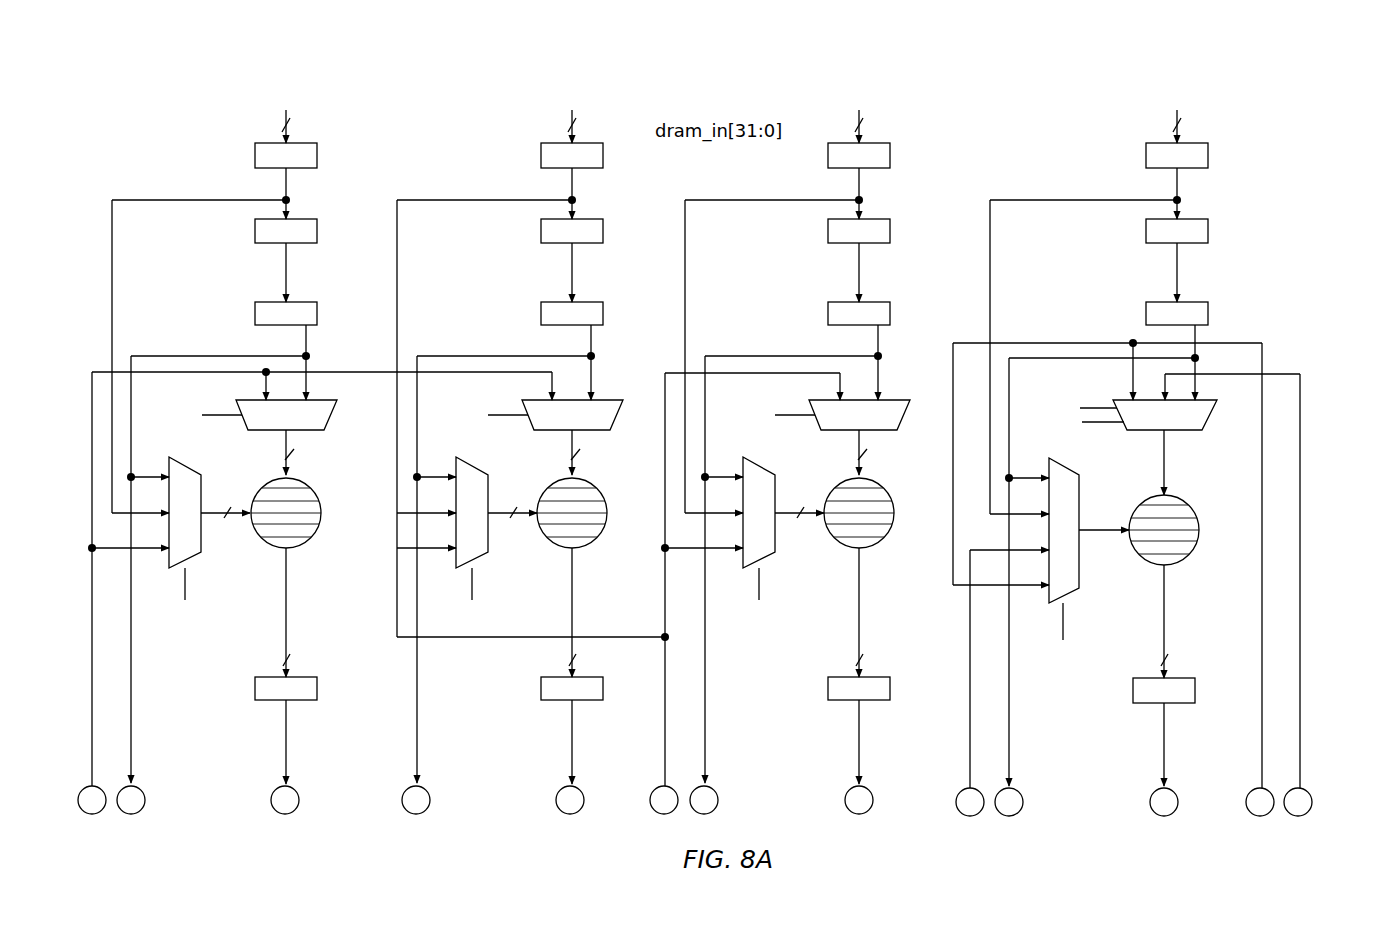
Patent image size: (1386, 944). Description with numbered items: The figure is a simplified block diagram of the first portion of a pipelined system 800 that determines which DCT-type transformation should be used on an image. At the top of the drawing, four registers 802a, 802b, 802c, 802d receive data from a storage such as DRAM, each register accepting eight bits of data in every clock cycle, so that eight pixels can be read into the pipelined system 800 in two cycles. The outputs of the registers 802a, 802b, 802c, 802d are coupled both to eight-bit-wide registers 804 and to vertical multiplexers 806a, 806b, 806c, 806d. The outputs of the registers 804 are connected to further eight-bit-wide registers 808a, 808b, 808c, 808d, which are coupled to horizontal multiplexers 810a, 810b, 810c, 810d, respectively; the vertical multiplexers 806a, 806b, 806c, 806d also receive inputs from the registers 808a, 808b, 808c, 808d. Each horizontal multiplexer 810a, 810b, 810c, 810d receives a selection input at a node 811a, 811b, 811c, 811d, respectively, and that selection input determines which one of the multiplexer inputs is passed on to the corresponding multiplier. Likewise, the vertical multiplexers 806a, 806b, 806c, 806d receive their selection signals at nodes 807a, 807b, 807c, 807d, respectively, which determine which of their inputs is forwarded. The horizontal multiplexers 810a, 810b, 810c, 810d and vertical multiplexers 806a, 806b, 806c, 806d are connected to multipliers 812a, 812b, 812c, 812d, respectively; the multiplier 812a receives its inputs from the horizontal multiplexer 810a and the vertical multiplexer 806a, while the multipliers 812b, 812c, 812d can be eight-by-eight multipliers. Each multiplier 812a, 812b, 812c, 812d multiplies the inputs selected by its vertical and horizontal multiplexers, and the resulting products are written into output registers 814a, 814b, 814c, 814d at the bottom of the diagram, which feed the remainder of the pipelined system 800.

The pipelined system 800 is at (1314, 185).
The register 802a is at (1187, 168).
The register 802b is at (866, 168).
The register 802c is at (579, 168).
The register 802d is at (293, 168).
The register 804 is at (293, 243).
The vertical multiplexer 806a is at (1080, 498).
The vertical multiplexer 806b is at (760, 463).
The vertical multiplexer 806c is at (473, 463).
The vertical multiplexer 806d is at (187, 463).
The node 807a is at (1068, 613).
The node 807b is at (763, 574).
The node 807c is at (476, 574).
The node 807d is at (190, 574).
The register 808a is at (1162, 302).
The register 808b is at (845, 302).
The register 808c is at (558, 302).
The register 808d is at (272, 302).
The horizontal multiplexer 810a is at (1203, 430).
The horizontal multiplexer 810b is at (898, 430).
The horizontal multiplexer 810c is at (611, 430).
The horizontal multiplexer 810d is at (325, 430).
The node 811a is at (1080, 408).
The node 811b is at (801, 414).
The node 811c is at (514, 414).
The node 811d is at (228, 414).
The multiplier 812a is at (1160, 567).
The multiplier 812b is at (851, 550).
The multiplier 812c is at (564, 550).
The multiplier 812d is at (278, 550).
The register 814a is at (1143, 703).
The register 814b is at (845, 677).
The register 814c is at (558, 677).
The register 814d is at (272, 677).